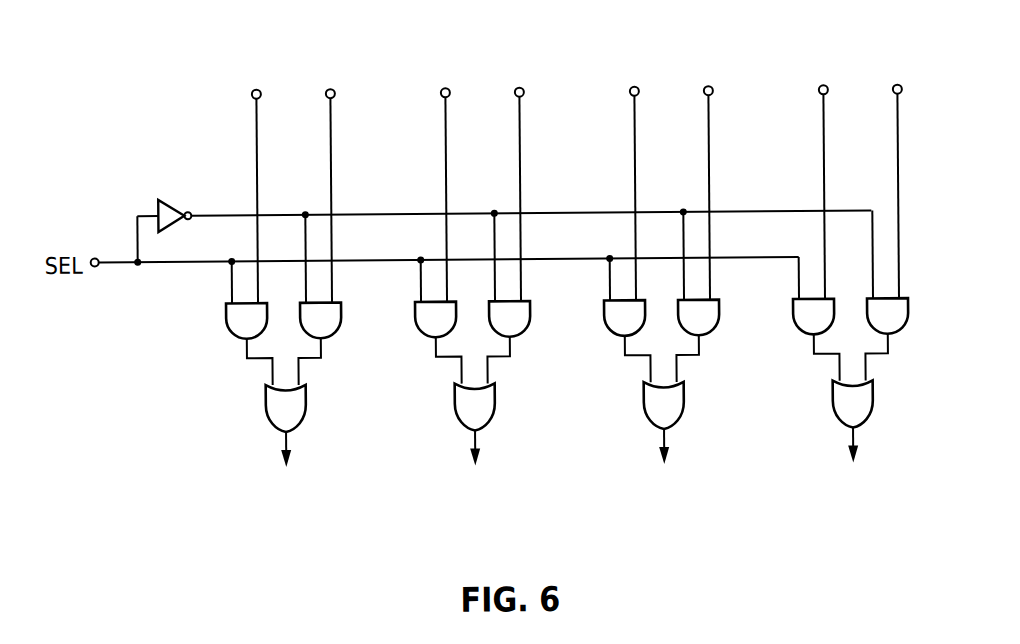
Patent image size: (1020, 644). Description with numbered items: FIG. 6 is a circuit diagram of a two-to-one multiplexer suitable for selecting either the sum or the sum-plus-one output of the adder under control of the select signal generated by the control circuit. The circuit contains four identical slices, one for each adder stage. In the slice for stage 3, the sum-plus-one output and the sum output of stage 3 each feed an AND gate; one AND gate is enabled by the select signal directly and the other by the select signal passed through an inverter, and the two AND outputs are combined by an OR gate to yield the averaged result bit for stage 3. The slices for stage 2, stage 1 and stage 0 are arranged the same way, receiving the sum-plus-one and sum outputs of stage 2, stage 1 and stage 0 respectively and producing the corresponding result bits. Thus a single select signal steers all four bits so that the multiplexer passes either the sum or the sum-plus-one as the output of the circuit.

The stage 3 is at (286, 278).
The stage 2 is at (475, 276).
The stage 1 is at (664, 275).
The stage 0 is at (853, 273).